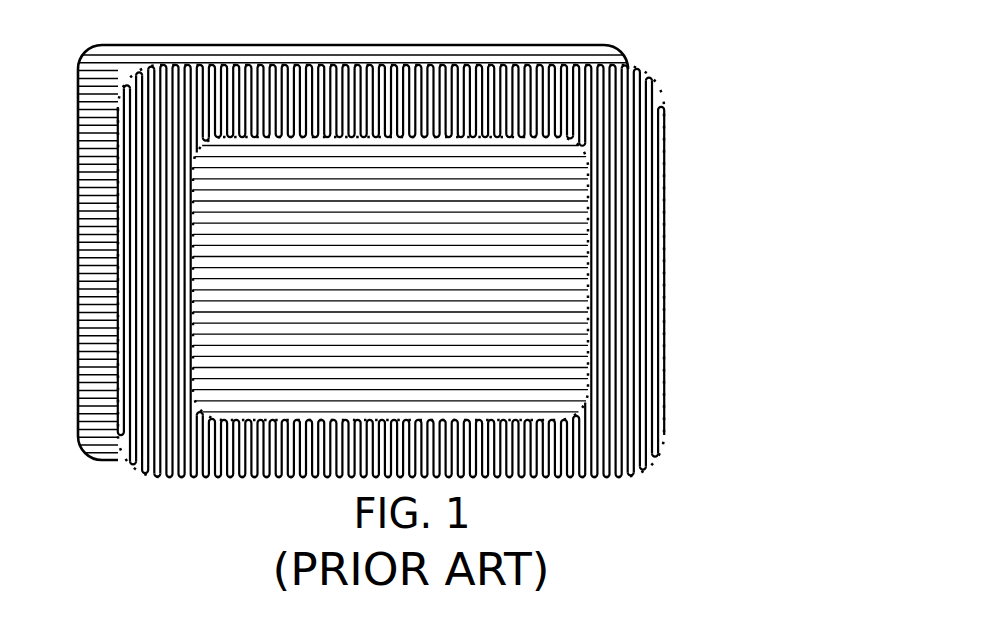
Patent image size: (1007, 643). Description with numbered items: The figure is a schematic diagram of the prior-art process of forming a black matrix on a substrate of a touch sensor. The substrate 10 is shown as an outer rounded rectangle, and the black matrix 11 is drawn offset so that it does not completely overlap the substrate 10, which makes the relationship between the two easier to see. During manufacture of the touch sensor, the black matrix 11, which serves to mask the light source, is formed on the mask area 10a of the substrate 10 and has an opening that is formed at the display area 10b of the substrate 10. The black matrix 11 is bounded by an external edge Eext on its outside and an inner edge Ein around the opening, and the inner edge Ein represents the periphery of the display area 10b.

The substrate 10 is at (425, 295).
The mask area 10a is at (93, 413).
The display area 10b is at (562, 255).
The black matrix 11 is at (663, 187).
The external edge Eext is at (665, 322).
The inner edge Ein is at (503, 478).